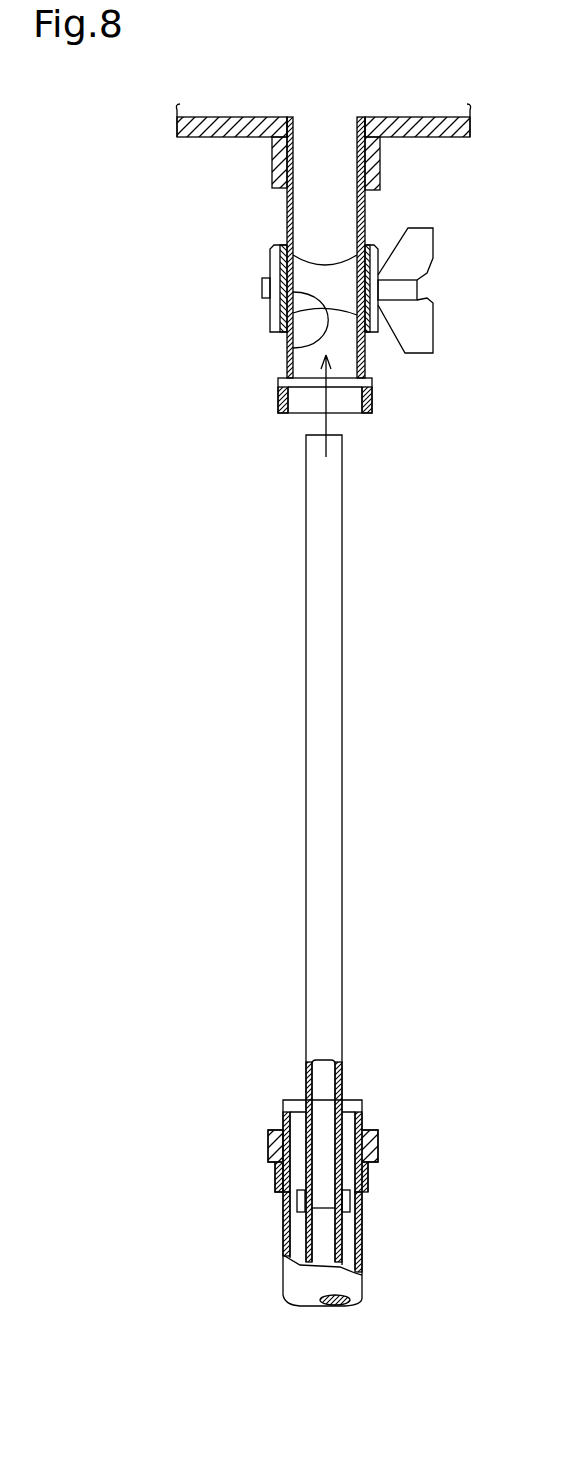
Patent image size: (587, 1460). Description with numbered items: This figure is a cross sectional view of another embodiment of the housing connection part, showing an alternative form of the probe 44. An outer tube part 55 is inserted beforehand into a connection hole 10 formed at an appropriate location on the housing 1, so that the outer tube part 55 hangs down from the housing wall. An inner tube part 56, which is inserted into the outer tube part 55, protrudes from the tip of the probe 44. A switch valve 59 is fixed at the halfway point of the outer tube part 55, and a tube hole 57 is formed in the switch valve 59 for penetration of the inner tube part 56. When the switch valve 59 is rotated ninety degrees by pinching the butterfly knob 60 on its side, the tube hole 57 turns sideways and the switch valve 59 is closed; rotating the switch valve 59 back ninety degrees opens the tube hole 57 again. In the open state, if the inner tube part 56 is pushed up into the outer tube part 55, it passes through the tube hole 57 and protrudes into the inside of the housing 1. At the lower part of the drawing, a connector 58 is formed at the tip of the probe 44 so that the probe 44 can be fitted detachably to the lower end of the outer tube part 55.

The housing 1 is at (203, 132).
The connection hole 10 is at (304, 137).
The outer tube part 55 is at (285, 205).
The switch valve 59 is at (283, 305).
The tube hole 57 is at (290, 342).
The butterfly knob 60 is at (425, 328).
The inner tube part 56 is at (338, 677).
The connector 58 is at (378, 1148).
The probe 44 is at (282, 1222).